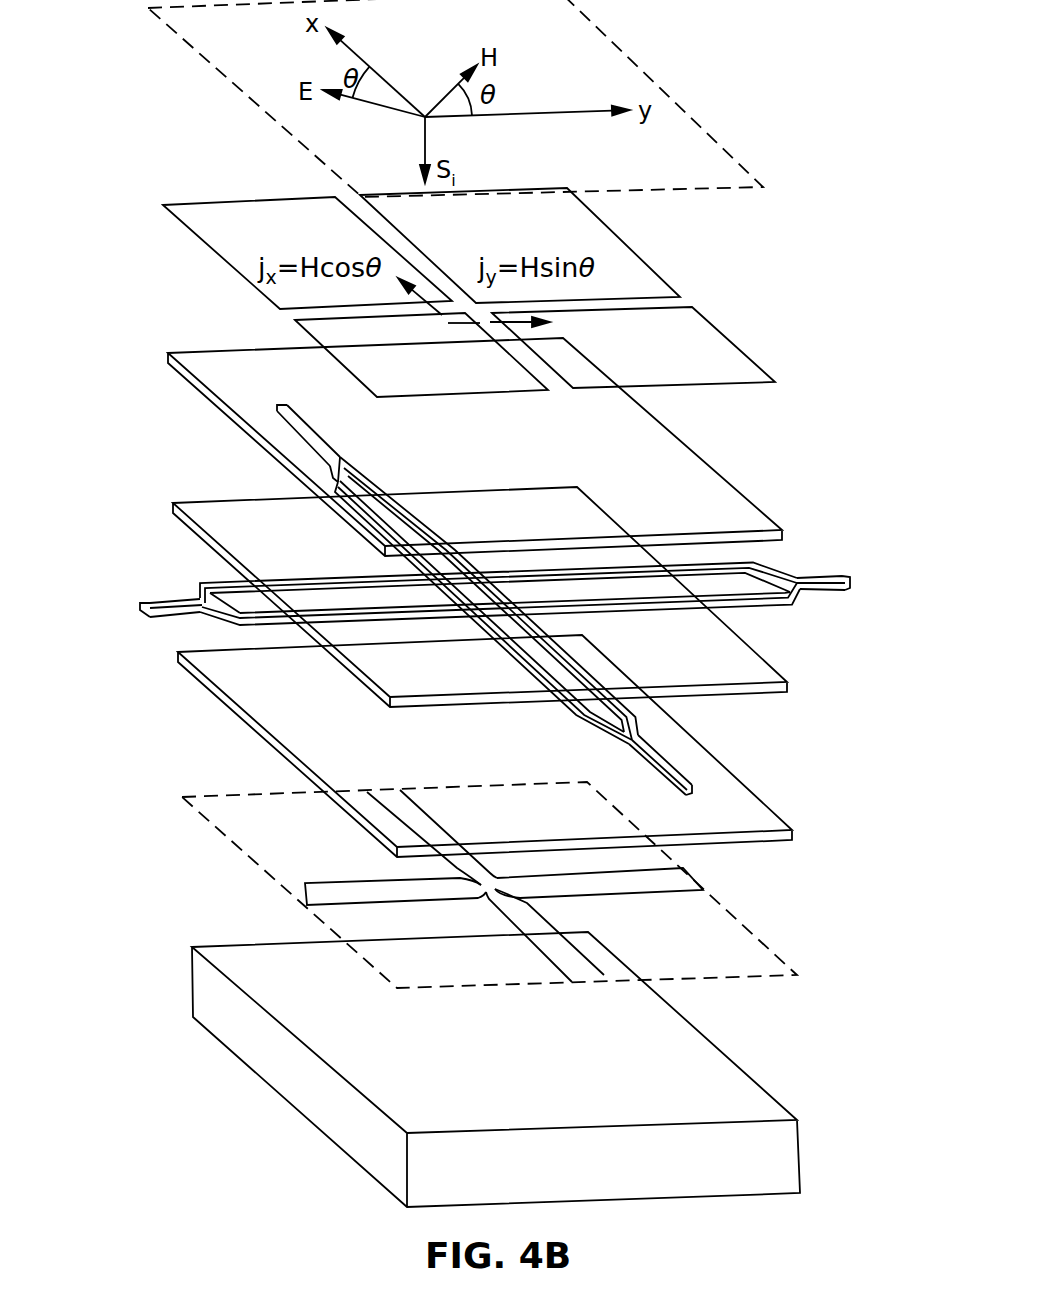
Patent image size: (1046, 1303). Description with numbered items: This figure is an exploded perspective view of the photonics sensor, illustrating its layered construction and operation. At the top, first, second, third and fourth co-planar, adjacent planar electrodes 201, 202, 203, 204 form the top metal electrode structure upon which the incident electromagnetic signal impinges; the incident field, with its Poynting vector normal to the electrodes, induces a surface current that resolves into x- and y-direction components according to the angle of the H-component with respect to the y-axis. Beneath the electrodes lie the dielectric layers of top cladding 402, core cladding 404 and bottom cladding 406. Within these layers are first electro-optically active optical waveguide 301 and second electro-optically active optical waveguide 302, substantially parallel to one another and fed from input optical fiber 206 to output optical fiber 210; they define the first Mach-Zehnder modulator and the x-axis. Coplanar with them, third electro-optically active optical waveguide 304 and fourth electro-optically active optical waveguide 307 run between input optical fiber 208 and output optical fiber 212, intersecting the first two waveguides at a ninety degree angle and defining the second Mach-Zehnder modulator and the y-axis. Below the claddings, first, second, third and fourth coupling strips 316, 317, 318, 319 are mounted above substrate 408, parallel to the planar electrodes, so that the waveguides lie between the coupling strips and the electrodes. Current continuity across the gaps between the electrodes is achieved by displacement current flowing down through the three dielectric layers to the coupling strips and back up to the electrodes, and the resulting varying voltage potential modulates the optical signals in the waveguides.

The first planar electrode 201 is at (595, 214).
The second planar electrode 202 is at (712, 337).
The third planar electrode 203 is at (315, 326).
The fourth planar electrode 204 is at (215, 230).
The input optical fiber 206 is at (295, 432).
The input optical fiber 208 is at (840, 586).
The output optical fiber 210 is at (685, 767).
The output optical fiber 212 is at (150, 600).
The first electro-optically active optical waveguide 301 is at (583, 668).
The second electro-optically active optical waveguide 302 is at (543, 673).
The third electro-optically active optical waveguide 304 is at (372, 614).
The fourth electro-optically active optical waveguide 307 is at (333, 578).
The first coupling strip 316 is at (443, 853).
The second coupling strip 317 is at (583, 967).
The third coupling strip 318 is at (690, 888).
The fourth coupling strip 319 is at (300, 881).
The top cladding 402 is at (215, 370).
The core cladding 404 is at (205, 508).
The bottom cladding 406 is at (230, 678).
The substrate 408 is at (217, 1018).